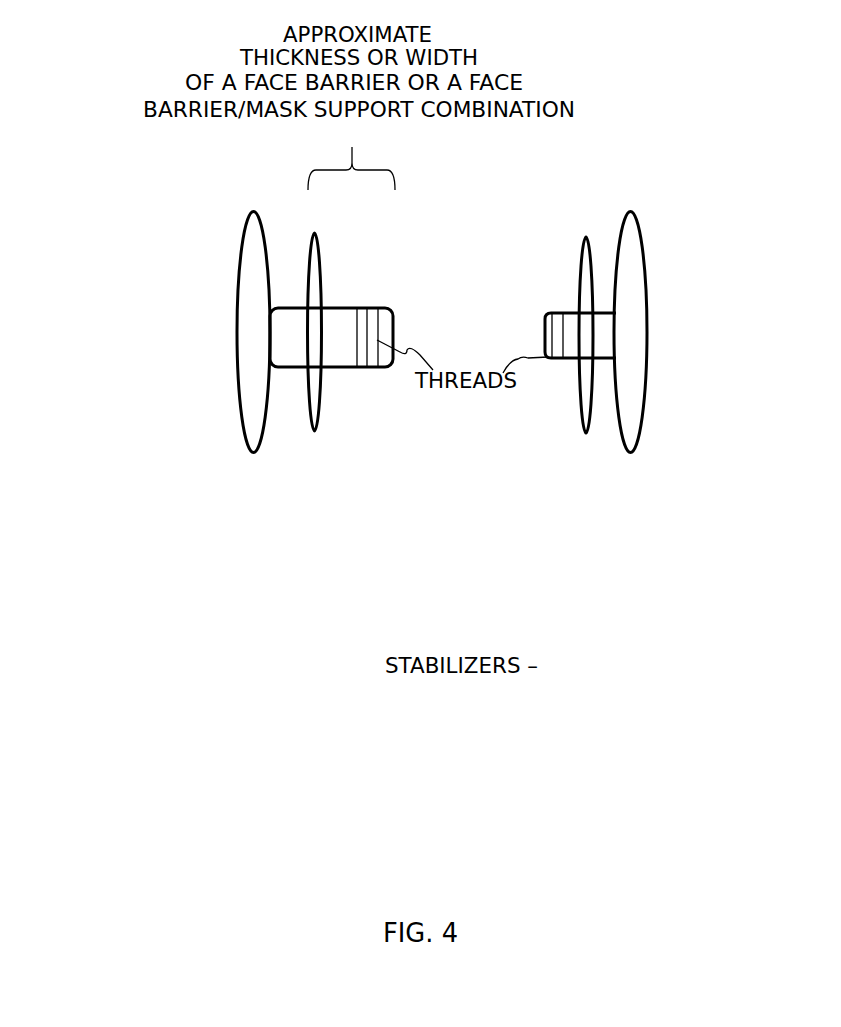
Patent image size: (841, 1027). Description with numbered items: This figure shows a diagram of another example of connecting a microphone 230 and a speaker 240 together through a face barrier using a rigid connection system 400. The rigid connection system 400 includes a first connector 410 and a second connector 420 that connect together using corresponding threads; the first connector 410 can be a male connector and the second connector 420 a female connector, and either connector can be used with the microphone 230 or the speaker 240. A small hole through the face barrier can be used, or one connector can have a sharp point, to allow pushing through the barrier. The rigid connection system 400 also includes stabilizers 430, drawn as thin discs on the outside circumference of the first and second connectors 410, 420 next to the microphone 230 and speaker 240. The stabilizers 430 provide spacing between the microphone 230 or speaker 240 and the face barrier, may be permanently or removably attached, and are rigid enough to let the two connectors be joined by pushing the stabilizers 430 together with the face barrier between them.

The rigid connection system 400 is at (467, 471).
The microphone 230 is at (237, 292).
The speaker 240 is at (645, 398).
The first connector 410 is at (545, 312).
The second connector 420 is at (372, 367).
The stabilizers 430 is at (588, 236).